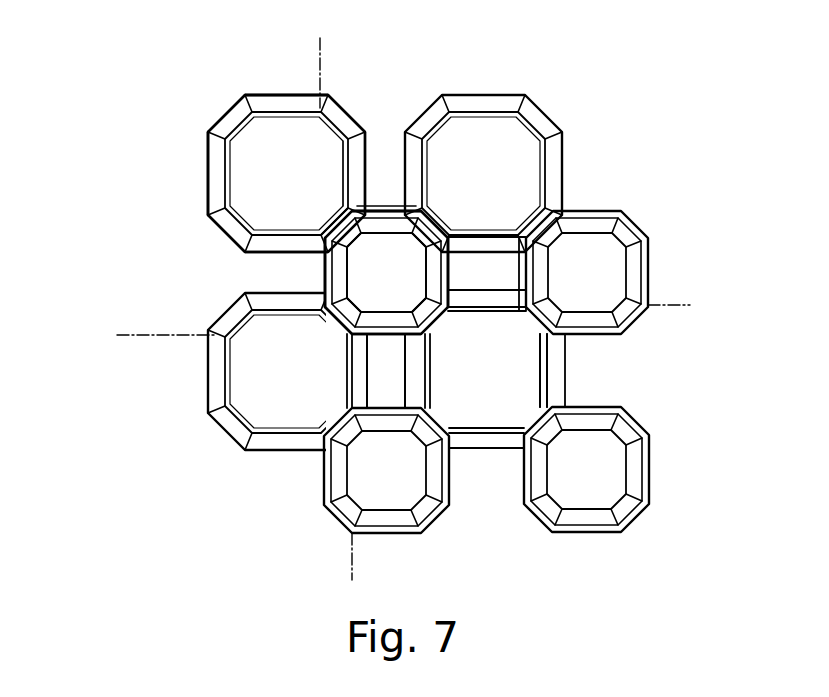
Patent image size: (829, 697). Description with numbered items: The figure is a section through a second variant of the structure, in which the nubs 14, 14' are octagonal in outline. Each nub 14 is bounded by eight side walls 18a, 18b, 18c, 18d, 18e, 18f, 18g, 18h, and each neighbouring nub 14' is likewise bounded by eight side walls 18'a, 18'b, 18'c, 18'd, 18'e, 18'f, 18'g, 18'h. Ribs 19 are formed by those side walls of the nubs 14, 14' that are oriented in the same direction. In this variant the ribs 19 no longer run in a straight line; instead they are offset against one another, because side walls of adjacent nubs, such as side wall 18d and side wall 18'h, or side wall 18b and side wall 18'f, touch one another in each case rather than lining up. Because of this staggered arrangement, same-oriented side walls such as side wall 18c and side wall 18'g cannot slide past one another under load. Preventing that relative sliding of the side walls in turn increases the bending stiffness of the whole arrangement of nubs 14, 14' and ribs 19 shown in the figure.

The nub 14 is at (245, 173).
The nub 14' is at (472, 235).
The side wall 18a is at (260, 102).
The side wall 18b is at (335, 113).
The side wall 18c is at (343, 160).
The side wall 18d is at (335, 225).
The side wall 18e is at (290, 235).
The side wall 18f is at (235, 228).
The side wall 18g is at (217, 173).
The side wall 18h is at (222, 118).
The side wall 18'a is at (386, 146).
The side wall 18'b is at (457, 184).
The side wall 18'c is at (484, 236).
The side wall 18'd is at (559, 368).
The side wall 18'e is at (319, 420).
The side wall 18'f is at (244, 345).
The side wall 18'g is at (246, 272).
The side wall 18'h is at (385, 272).
The rib 19 is at (138, 334).